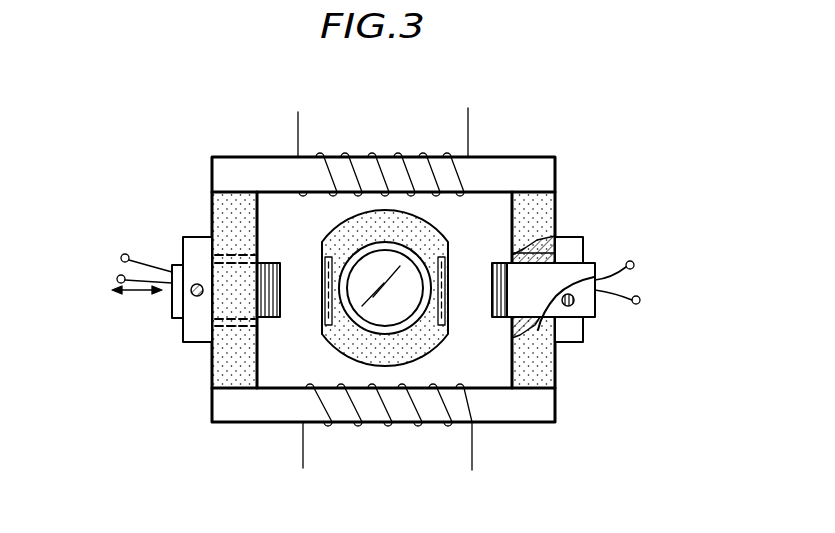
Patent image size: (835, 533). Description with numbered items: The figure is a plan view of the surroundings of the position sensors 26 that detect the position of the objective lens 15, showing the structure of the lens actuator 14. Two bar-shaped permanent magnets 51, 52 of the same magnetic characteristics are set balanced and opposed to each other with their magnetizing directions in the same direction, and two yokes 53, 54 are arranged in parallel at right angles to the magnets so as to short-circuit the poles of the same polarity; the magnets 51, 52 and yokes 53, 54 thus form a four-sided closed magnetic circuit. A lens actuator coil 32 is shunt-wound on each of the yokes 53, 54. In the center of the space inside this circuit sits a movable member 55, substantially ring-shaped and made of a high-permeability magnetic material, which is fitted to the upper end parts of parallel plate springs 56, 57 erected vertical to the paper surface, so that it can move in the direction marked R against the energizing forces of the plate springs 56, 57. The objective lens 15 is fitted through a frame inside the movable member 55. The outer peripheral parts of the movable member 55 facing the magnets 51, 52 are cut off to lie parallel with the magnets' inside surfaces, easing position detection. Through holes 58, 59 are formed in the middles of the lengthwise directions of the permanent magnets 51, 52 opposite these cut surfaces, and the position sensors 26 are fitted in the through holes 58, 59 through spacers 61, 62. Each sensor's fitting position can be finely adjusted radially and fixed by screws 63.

The lens actuator 14 is at (224, 146).
The objective lens 15 is at (362, 313).
The position sensor 26 is at (606, 227).
The lens actuator coil 32 is at (347, 156).
The permanent magnet 51 is at (217, 220).
The permanent magnet 52 is at (555, 204).
The yoke 53 is at (500, 165).
The yoke 54 is at (522, 413).
The movable member 55 is at (432, 238).
The plate spring 56 is at (326, 262).
The plate spring 57 is at (447, 262).
The through hole 58 is at (213, 328).
The through hole 59 is at (515, 322).
The spacer 61 is at (187, 330).
The spacer 62 is at (578, 335).
The screw 63 is at (195, 283).